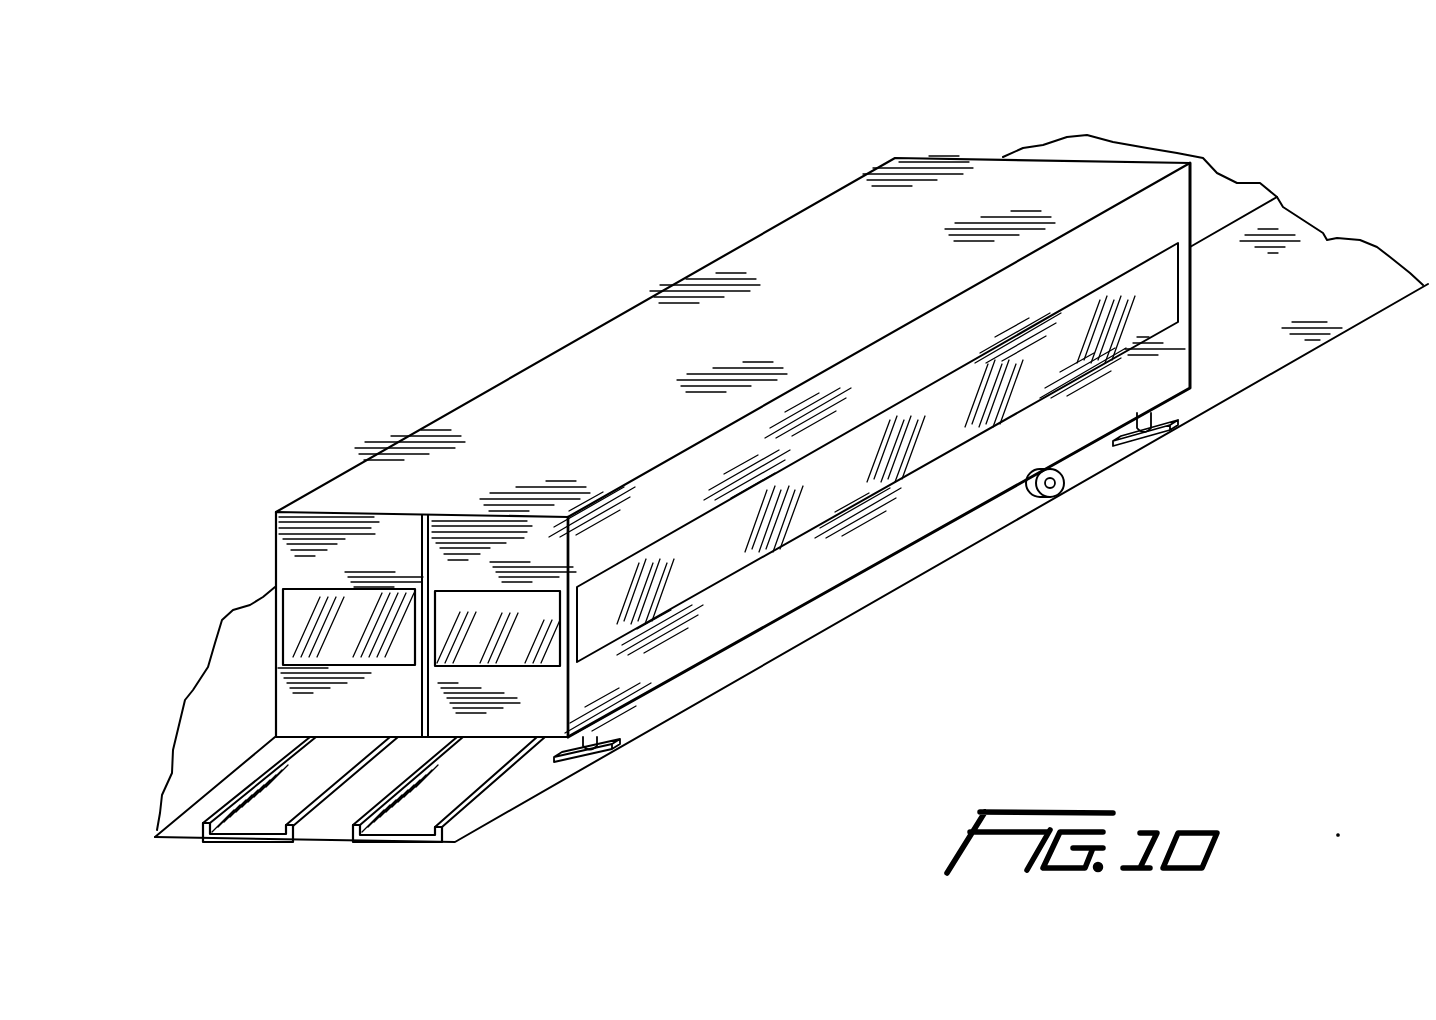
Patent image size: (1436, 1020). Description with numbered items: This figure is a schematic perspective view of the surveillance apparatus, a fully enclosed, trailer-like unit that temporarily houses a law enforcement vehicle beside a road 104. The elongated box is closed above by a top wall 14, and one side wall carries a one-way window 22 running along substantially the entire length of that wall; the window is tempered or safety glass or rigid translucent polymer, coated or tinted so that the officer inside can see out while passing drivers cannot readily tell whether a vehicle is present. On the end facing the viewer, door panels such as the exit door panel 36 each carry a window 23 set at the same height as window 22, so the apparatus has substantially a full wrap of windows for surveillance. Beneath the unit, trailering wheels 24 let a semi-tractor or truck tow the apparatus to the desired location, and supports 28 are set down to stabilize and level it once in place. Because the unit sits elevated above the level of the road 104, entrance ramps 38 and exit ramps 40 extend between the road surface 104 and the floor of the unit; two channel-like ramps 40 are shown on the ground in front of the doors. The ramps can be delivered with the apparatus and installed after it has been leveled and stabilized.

The top wall 14 is at (917, 185).
The one-way window 22 is at (908, 403).
The windows 23 is at (297, 612).
The trailering wheels 24 is at (1063, 493).
The supports 28 is at (1160, 438).
The exit door panel 36 is at (475, 535).
The entrance ramps 38 is at (342, 535).
The exit ramps 40 is at (240, 828).
The road 104 is at (1327, 240).